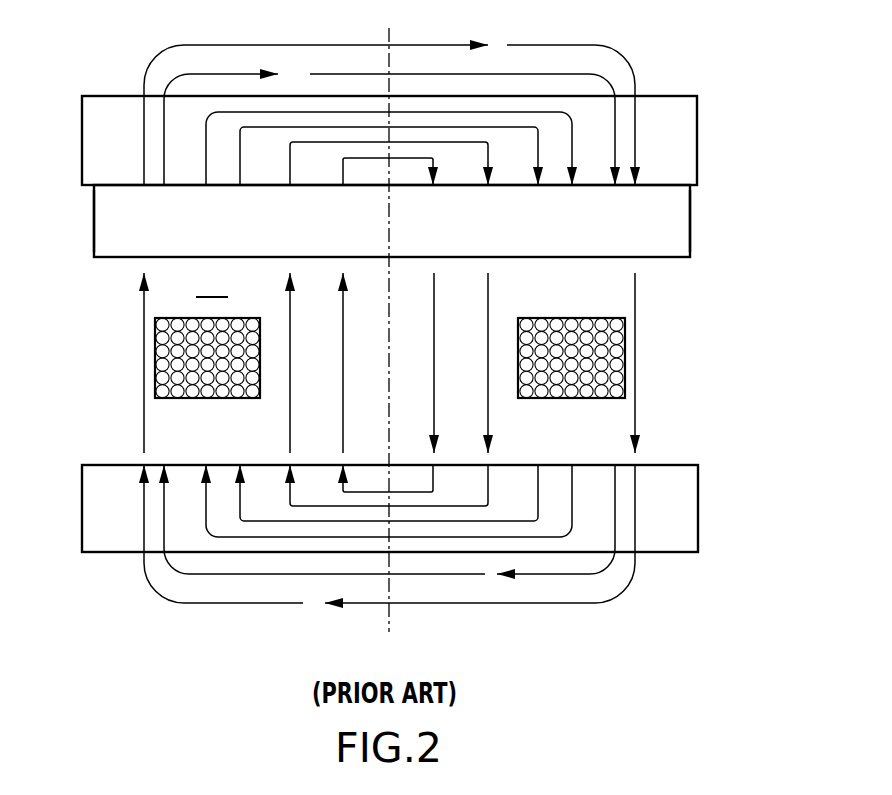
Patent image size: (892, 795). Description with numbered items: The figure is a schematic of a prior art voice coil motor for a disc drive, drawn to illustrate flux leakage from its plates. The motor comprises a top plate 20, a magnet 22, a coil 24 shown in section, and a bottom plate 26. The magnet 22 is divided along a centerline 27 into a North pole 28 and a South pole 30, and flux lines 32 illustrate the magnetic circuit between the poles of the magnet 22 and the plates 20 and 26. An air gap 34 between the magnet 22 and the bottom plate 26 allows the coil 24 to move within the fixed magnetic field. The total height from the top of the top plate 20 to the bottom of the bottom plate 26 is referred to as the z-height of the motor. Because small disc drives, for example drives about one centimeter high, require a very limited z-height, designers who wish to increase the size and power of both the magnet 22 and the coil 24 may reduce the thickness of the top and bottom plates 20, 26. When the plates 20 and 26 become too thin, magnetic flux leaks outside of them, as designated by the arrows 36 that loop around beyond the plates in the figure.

The top plate 20 is at (677, 141).
The magnet 22 is at (690, 243).
The coil 24 is at (625, 375).
The bottom plate 26 is at (698, 483).
The centerline 27 is at (389, 213).
The North pole 28 is at (109, 221).
The South pole 30 is at (679, 232).
The flux lines 32 is at (144, 437).
The air gap 34 is at (212, 285).
The arrows 36 is at (228, 45).